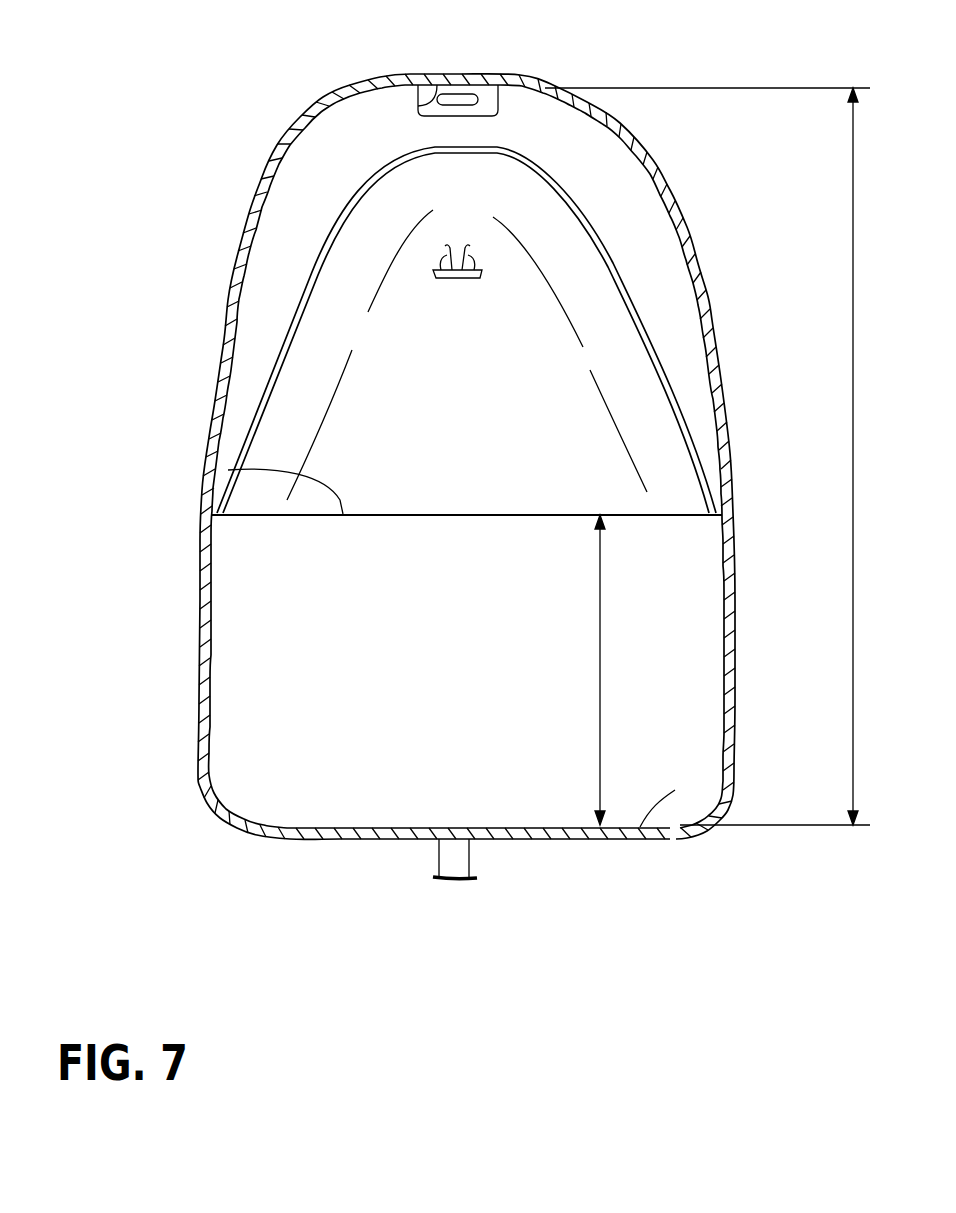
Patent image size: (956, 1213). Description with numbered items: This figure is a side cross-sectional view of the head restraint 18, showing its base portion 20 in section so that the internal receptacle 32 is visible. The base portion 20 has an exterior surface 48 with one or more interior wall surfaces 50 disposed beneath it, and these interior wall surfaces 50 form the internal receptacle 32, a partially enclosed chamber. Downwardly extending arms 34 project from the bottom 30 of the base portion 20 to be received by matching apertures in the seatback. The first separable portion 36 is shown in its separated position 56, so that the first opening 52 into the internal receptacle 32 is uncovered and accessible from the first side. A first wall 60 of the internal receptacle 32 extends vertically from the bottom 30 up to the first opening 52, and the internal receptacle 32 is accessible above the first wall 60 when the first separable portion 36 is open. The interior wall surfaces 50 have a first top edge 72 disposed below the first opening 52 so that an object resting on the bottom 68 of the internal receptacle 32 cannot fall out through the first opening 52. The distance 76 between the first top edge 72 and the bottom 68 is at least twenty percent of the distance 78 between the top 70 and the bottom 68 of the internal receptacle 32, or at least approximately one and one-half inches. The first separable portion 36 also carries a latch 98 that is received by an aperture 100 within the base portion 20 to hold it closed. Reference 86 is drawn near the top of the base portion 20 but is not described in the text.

The head restraint 18 is at (218, 300).
The base portion 20 is at (708, 323).
The bottom 30 is at (333, 840).
The internal receptacle 32 is at (283, 612).
The downwardly extending arms 34 is at (457, 852).
The first separable portion 36 is at (565, 430).
The exterior surface 48 is at (705, 243).
The interior wall surfaces 50 is at (292, 157).
The first opening 52 is at (308, 206).
The separated position 56 is at (298, 274).
The first wall 60 is at (658, 633).
The bottom of the internal receptacle 68 is at (675, 790).
The top of the internal receptacle 70 is at (378, 103).
The first top edge 72 is at (230, 470).
The distance between the first top edge and the bottom 76 is at (572, 688).
The distance between the top and the bottom of the internal receptacle 78 is at (862, 470).
The cap 86 is at (463, 147).
The latch 98 is at (455, 280).
The aperture 100 is at (458, 94).